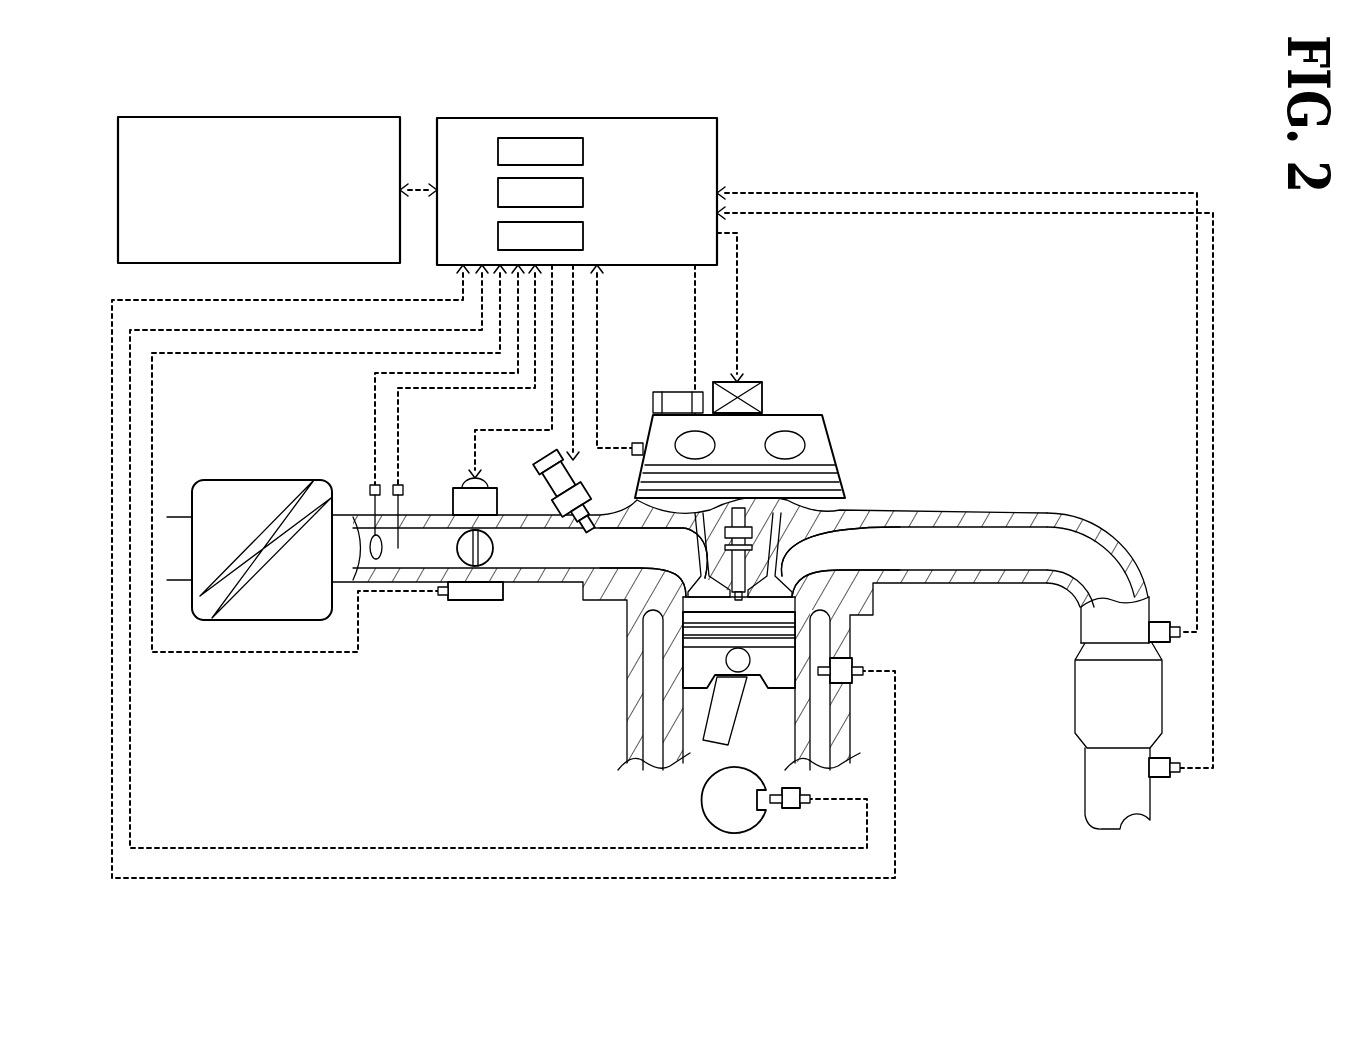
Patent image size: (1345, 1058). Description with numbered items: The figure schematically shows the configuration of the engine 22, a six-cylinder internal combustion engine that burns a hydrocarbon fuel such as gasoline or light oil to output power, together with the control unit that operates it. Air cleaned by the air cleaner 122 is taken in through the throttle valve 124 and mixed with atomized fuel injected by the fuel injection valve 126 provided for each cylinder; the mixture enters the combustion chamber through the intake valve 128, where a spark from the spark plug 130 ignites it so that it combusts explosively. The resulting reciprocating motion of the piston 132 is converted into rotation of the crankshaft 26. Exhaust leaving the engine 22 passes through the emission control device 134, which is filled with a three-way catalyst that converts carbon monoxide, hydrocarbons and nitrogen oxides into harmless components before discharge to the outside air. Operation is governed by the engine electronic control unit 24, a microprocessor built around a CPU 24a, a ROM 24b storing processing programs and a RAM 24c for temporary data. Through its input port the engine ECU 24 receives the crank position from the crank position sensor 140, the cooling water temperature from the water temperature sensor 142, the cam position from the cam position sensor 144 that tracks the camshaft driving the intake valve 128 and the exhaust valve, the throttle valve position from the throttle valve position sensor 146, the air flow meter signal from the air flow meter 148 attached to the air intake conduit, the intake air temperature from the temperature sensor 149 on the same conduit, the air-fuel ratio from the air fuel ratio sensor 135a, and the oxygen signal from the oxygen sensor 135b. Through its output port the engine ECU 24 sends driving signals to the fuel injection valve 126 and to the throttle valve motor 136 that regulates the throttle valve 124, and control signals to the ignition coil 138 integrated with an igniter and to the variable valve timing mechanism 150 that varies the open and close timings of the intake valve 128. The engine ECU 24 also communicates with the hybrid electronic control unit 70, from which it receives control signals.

The engine 22 is at (787, 349).
The engine electronic control unit 24 is at (576, 118).
The CPU 24a is at (584, 151).
The ROM 24b is at (584, 193).
The RAM 24c is at (584, 237).
The crankshaft 26 is at (702, 799).
The hybrid electronic control unit 70 is at (267, 117).
The air cleaner 122 is at (260, 478).
The throttle valve 124 is at (493, 535).
The fuel injection valve 126 is at (553, 497).
The intake valve 128 is at (700, 570).
The spark plug 130 is at (778, 580).
The piston 132 is at (700, 658).
The emission control device 134 is at (1087, 682).
The air fuel ratio sensor 135a is at (1160, 622).
The oxygen sensor 135b is at (1160, 777).
The throttle valve motor 136 is at (457, 487).
The ignition coil 138 is at (765, 398).
The crank position sensor 140 is at (791, 808).
The water temperature sensor 142 is at (856, 662).
The cam position sensor 144 is at (632, 445).
The throttle valve position sensor 146 is at (475, 601).
The air flow meter 148 is at (367, 484).
The temperature sensor 149 is at (402, 485).
The variable valve timing mechanism 150 is at (837, 450).